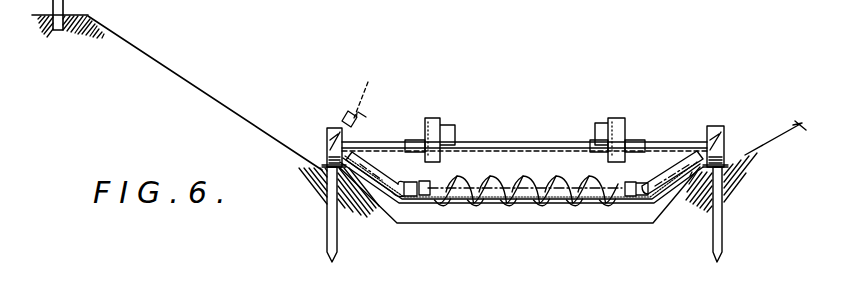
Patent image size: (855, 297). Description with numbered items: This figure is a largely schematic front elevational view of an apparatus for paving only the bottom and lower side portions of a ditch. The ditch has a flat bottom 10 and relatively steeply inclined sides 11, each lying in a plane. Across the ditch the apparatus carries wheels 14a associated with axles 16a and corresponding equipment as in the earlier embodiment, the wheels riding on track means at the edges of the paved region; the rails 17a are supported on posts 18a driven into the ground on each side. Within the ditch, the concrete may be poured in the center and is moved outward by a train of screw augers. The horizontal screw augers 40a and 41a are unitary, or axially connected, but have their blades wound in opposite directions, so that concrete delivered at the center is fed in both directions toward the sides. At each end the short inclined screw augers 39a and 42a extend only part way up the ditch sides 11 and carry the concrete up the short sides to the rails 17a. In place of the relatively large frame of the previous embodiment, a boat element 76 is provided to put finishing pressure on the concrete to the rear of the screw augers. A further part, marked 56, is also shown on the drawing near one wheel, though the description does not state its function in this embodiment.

The flat bottom 10 is at (525, 215).
The inclined sides 11 is at (202, 97).
The wheels 14a is at (328, 128).
The axles 16a is at (410, 140).
The rails 17a is at (300, 165).
The posts 18a is at (325, 240).
The screw auger 39a is at (386, 190).
The horizontal screw auger 40a is at (467, 209).
The horizontal screw auger 41a is at (628, 212).
The screw auger 42a is at (683, 195).
The fastener 56 is at (362, 94).
The boat element 76 is at (508, 168).